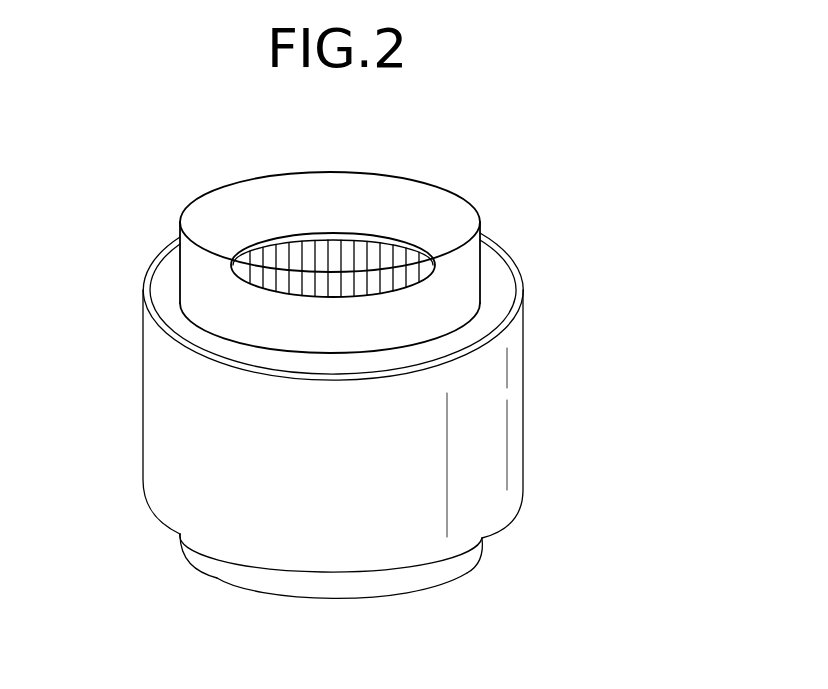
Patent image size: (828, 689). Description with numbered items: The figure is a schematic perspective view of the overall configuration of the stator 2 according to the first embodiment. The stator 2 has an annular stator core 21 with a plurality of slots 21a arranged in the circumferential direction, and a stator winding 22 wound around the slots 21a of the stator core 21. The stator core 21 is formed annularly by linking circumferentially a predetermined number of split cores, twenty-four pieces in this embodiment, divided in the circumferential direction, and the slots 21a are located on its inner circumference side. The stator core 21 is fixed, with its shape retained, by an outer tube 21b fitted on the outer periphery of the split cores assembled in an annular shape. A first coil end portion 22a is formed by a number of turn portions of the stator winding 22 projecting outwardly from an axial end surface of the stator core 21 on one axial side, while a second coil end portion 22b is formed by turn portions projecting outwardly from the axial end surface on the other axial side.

The stator 2 is at (195, 168).
The stator core 21 is at (530, 407).
The slots 21a is at (330, 267).
The outer tube 21b is at (522, 285).
The stator winding 22 is at (470, 203).
The first coil end portion 22a is at (205, 253).
The second coil end portion 22b is at (223, 568).